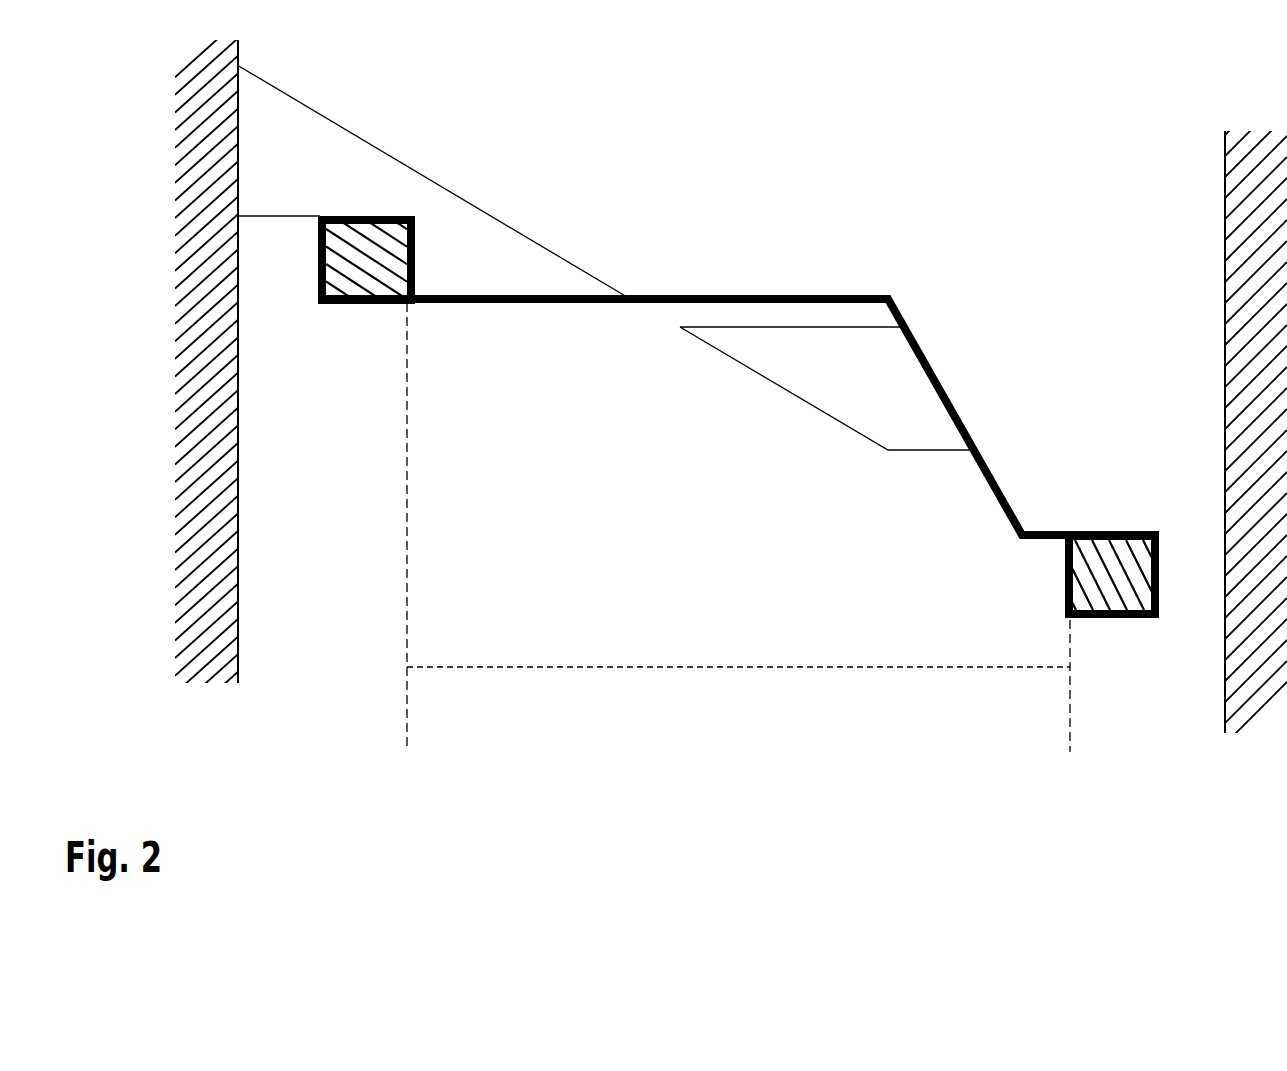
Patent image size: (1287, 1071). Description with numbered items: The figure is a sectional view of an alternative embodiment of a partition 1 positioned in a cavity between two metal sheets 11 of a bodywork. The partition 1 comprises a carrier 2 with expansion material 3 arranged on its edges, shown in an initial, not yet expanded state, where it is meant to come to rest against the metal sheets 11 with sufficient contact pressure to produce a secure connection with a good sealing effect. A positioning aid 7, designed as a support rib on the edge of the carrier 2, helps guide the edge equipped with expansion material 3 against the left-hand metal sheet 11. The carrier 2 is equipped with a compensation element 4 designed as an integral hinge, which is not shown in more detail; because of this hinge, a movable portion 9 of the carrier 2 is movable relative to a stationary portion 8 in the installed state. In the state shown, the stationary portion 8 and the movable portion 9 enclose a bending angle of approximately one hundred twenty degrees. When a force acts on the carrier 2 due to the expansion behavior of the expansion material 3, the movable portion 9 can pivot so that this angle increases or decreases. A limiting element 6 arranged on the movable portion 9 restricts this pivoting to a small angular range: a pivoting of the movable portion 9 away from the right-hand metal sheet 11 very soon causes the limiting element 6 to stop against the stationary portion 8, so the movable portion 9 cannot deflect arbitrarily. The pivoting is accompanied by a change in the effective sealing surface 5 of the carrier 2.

The partition 1 is at (933, 187).
The carrier 2 is at (516, 304).
The expansion material 3 is at (368, 267).
The compensation element 4 is at (888, 298).
The effective sealing surface 5 is at (600, 668).
The limiting element 6 is at (833, 388).
The positioning aid 7 is at (356, 164).
The stationary portion 8 is at (632, 296).
The movable portion 9 is at (1000, 487).
The metal sheet 11 is at (222, 572).